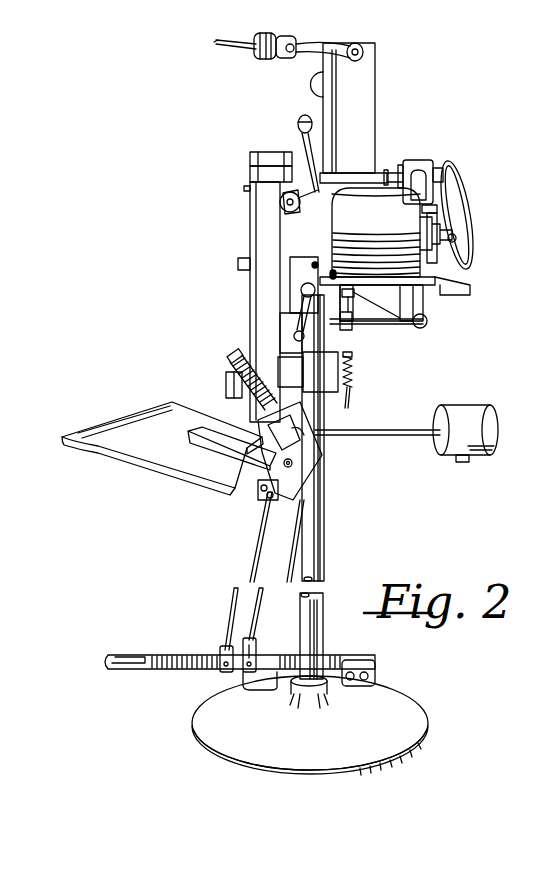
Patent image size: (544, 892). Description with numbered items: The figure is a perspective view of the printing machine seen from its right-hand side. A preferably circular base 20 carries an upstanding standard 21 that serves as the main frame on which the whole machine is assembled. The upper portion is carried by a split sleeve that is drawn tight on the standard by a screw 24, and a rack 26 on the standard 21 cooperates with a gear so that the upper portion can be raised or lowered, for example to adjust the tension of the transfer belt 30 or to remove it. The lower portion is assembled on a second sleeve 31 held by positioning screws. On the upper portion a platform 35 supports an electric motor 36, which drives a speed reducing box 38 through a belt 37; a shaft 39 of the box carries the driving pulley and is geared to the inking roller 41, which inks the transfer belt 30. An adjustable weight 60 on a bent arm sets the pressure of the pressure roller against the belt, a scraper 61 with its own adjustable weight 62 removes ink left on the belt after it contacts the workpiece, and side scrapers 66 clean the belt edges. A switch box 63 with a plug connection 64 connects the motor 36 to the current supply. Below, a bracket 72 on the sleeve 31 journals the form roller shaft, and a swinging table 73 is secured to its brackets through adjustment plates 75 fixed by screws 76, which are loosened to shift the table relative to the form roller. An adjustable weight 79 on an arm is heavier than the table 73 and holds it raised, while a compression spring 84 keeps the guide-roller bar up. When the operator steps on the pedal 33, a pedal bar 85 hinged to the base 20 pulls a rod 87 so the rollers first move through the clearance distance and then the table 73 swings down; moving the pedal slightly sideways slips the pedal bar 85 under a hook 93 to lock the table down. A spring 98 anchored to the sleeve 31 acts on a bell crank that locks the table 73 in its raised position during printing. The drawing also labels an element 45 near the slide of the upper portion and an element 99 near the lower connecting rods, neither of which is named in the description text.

The base 20 is at (196, 720).
The standard 21 is at (326, 542).
The screw 24 is at (302, 290).
The rack 26 is at (280, 328).
The transfer belt 30 is at (258, 344).
The sleeve 31 is at (340, 342).
The pedal 33 is at (122, 656).
The platform 35 is at (432, 291).
The electric motor 36 is at (468, 250).
The belt 37 is at (464, 196).
The speed reducing box 38 is at (432, 160).
The shaft 39 is at (391, 172).
The inking roller 41 is at (250, 248).
The bolt 45 is at (240, 262).
The adjustable weight 60 is at (280, 202).
The scraper 61 is at (262, 152).
The adjustable weight 62 is at (303, 116).
The switch box 63 is at (376, 92).
The plug connection 64 is at (300, 42).
The side scrapers 66 is at (245, 188).
The bracket 72 is at (232, 373).
The swinging table 73 is at (166, 468).
The adjustment plates 75 is at (292, 482).
The screws 76 is at (296, 463).
The adjustable weight 79 is at (466, 412).
The compression spring 84 is at (232, 393).
The pedal bar 85 is at (192, 656).
The rod 87 is at (260, 542).
The hook 93 is at (263, 655).
The spring 98 is at (353, 381).
The rod 99 is at (288, 566).